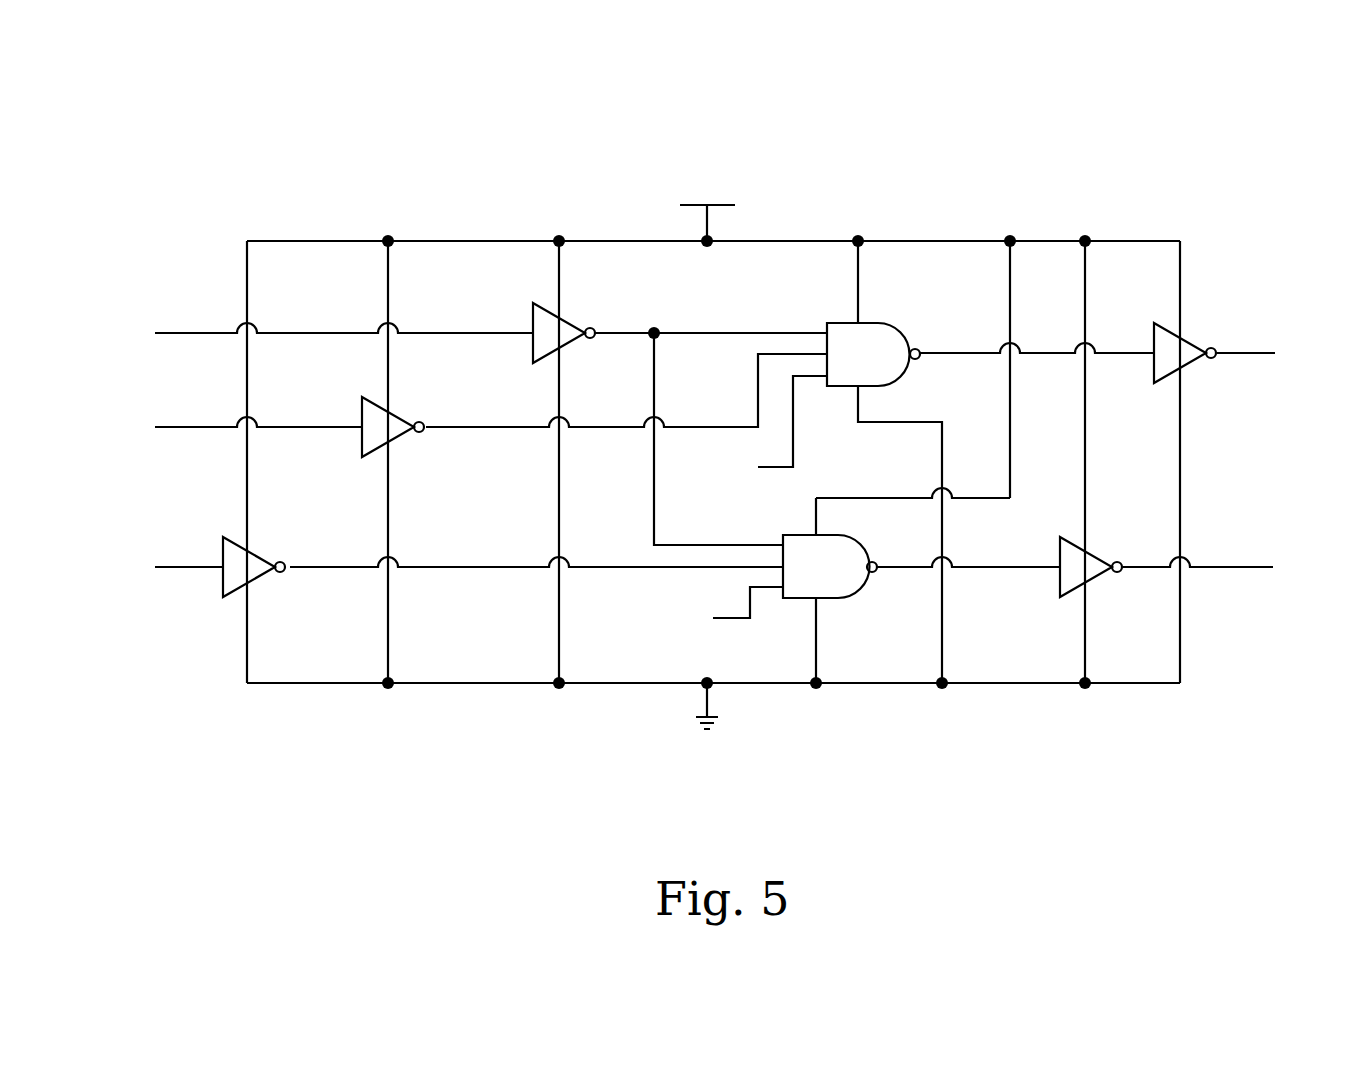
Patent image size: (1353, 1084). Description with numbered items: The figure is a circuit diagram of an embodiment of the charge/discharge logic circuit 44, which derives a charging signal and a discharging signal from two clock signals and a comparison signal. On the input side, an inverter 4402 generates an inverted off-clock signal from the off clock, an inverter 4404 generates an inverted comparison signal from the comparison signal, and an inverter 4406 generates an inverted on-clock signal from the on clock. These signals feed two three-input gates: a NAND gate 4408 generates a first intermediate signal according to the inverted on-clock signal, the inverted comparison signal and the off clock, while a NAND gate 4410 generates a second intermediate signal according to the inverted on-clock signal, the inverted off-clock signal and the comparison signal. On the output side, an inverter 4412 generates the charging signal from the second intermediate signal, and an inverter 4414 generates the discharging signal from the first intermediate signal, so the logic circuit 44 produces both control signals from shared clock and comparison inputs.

The charge/discharge logic circuit 44 is at (1230, 173).
The inverter 4402 is at (267, 559).
The inverter 4404 is at (362, 412).
The inverter 4406 is at (568, 324).
The NAND gate 4408 is at (877, 322).
The NAND gate 4410 is at (835, 599).
The inverter 4412 is at (1098, 556).
The inverter 4414 is at (1194, 341).